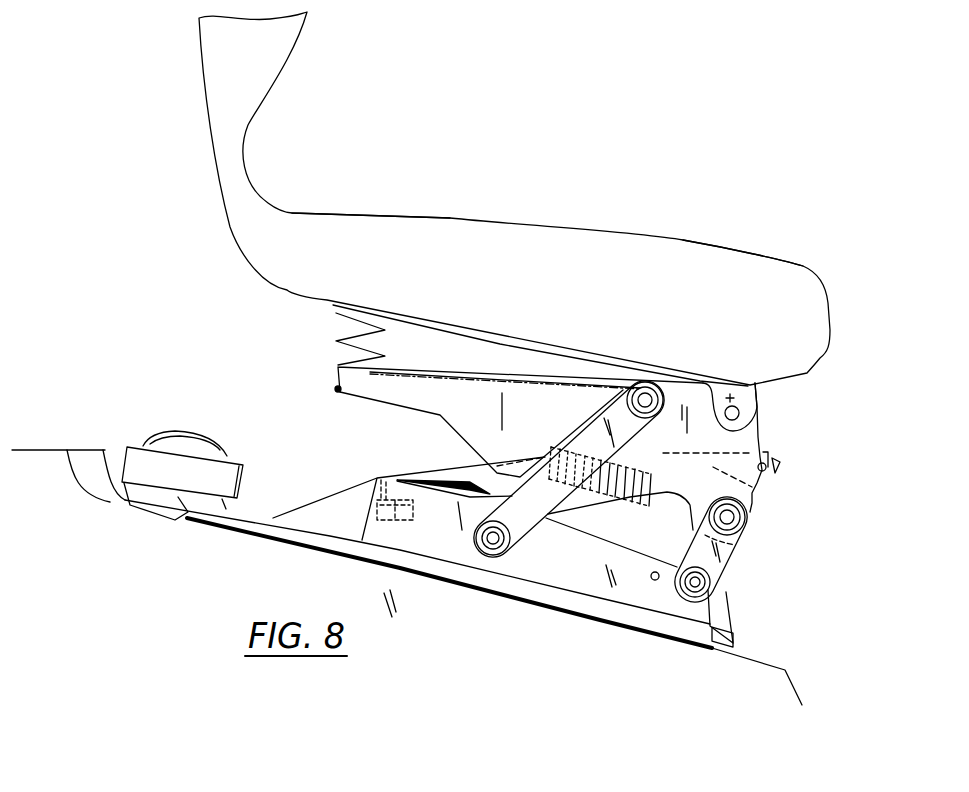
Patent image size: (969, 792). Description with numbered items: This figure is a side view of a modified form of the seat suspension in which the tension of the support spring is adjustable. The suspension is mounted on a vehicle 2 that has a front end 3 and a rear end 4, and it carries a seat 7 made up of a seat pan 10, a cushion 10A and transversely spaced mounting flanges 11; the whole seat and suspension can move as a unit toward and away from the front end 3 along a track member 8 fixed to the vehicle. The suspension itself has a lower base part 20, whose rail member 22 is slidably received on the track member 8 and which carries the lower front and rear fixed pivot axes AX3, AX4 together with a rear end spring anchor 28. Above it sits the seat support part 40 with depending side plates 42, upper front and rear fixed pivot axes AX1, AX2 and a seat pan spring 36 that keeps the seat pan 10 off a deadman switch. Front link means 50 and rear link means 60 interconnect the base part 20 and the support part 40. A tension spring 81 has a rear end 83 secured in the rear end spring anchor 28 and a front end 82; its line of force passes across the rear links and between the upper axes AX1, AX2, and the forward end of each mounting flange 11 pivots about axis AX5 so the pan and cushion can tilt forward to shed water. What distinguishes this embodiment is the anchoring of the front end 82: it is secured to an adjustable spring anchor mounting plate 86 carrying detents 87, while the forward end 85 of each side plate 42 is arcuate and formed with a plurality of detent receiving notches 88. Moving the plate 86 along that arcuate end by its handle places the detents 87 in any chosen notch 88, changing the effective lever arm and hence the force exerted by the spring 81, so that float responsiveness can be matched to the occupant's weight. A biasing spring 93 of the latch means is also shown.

The vehicle 2 is at (103, 448).
The front end 3 is at (800, 688).
The rear end 4 is at (45, 449).
The seat 7 is at (710, 240).
The track member 8 is at (637, 650).
The seat pan 10 is at (228, 228).
The cushion 10A is at (467, 220).
The mounting flange 11 is at (780, 387).
The base part 20 is at (731, 608).
The rail member 22 is at (736, 642).
The rear end spring anchor 28 is at (377, 493).
The seat pan spring 36 is at (330, 340).
The seat support part 40 is at (437, 345).
The side plate 42 is at (497, 417).
The front link means 50 is at (741, 555).
The rear link means 60 is at (552, 512).
The tension spring 81 is at (630, 493).
The front end 82 is at (760, 487).
The rear end 83 is at (385, 477).
The forward end 85 is at (760, 422).
The adjustable spring anchor mounting plate 86 is at (765, 450).
The detent 87 is at (768, 473).
The detent receiving notch 88 is at (767, 438).
The biasing spring 93 is at (655, 572).
The upper front fixed pivot axis AX1 is at (732, 518).
The upper rear fixed pivot axis AX2 is at (637, 400).
The lower front fixed pivot axis AX3 is at (703, 581).
The lower rear fixed pivot axis AX4 is at (490, 543).
The axis of front spring anchor shaft AX5 is at (767, 405).